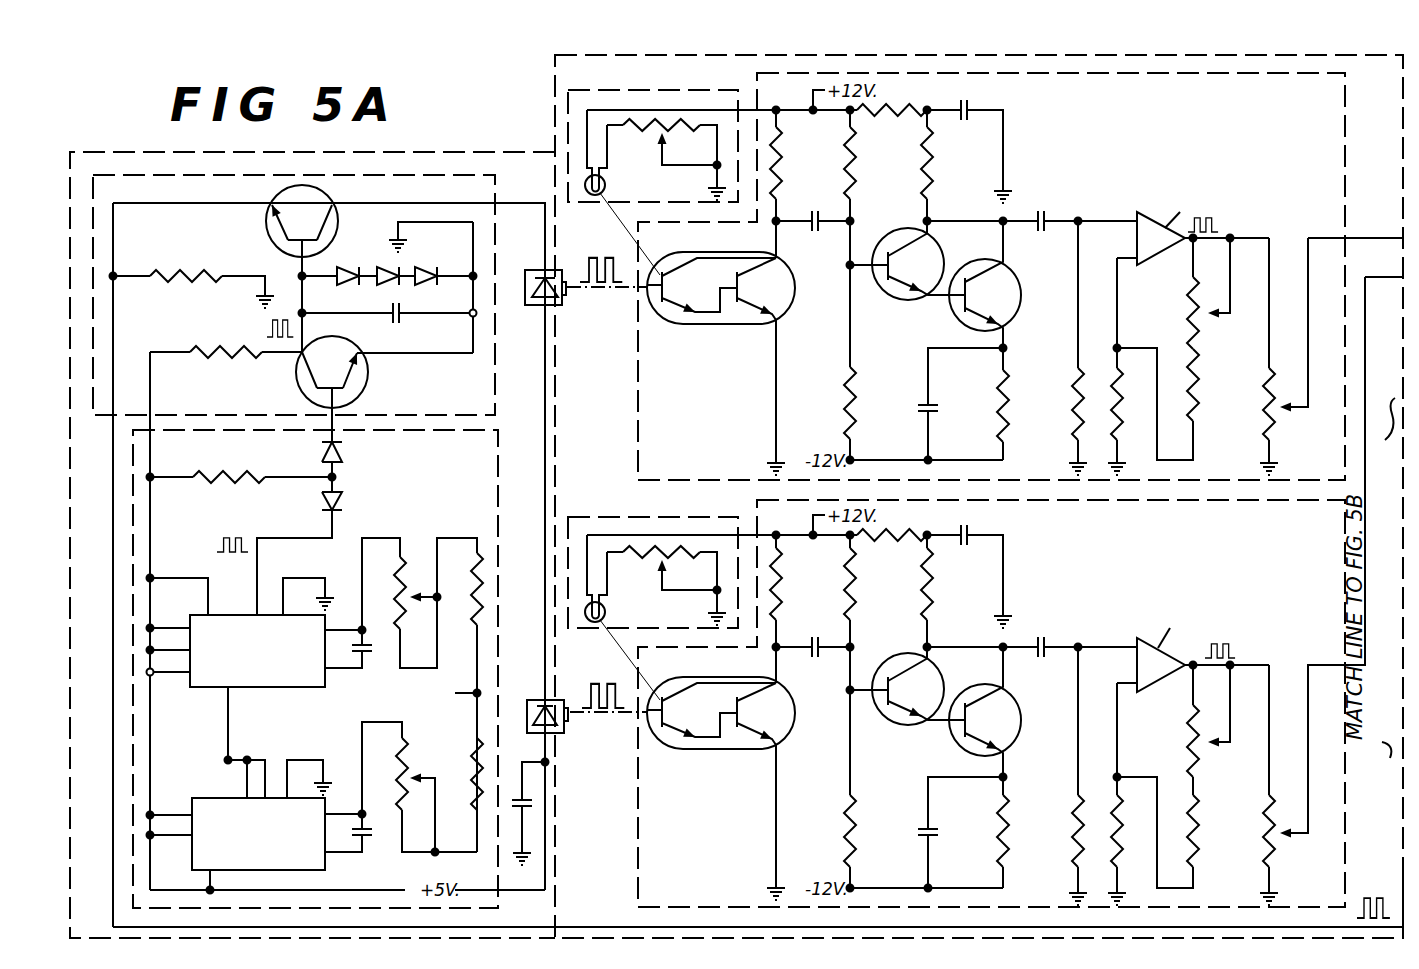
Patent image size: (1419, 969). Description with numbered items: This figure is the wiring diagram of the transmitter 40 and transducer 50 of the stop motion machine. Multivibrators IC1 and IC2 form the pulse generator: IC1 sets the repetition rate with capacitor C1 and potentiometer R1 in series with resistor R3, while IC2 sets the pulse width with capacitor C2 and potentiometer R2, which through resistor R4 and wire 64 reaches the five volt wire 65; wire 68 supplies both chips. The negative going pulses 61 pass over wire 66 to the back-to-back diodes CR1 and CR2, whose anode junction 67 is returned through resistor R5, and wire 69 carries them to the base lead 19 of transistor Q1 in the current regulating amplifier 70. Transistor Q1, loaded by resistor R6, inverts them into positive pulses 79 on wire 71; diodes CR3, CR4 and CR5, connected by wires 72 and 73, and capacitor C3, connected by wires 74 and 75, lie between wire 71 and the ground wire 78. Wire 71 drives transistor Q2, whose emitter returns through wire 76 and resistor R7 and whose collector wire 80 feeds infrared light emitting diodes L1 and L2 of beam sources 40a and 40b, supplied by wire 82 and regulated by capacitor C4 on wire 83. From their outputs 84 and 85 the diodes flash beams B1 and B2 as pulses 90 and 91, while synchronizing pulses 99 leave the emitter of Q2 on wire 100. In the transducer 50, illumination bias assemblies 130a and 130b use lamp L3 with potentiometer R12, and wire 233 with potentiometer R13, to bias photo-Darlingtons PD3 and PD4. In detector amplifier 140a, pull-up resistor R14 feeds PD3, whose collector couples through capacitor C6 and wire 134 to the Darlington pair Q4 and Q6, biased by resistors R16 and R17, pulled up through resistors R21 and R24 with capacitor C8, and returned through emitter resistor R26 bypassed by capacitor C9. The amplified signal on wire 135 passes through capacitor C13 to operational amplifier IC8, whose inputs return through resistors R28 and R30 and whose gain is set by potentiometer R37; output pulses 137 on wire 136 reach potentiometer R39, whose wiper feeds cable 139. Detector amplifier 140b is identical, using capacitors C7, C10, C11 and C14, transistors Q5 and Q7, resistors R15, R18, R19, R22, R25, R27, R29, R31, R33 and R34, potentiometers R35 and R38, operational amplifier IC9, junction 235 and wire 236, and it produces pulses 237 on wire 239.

The current regulating amplifier 70 is at (141, 166).
The transmitter 40 is at (458, 152).
The transducer 50 is at (548, 90).
The wire 80 is at (413, 203).
The wire 76 is at (113, 243).
The wire 71 is at (300, 288).
The wire 72 is at (306, 277).
The wire 73 is at (448, 282).
The wire 74 is at (340, 317).
The wire 75 is at (426, 314).
The wire 78 is at (420, 353).
The positive pulses 79 is at (265, 328).
The transistor input 19 is at (298, 365).
The wire 69 is at (328, 426).
The junction 67 is at (340, 477).
The wire 66 is at (292, 538).
The negative going logic level zero pulses 61 is at (236, 535).
The wire 68 is at (152, 550).
The wire 65 is at (477, 670).
The wire 64 is at (362, 736).
The wire 83 is at (522, 779).
The wire 82 is at (545, 866).
The light beam output 84 is at (565, 303).
The light beam output 85 is at (564, 731).
The pulses 90 is at (598, 257).
The pulses 91 is at (610, 683).
The wire 100 is at (622, 926).
The constant adjustable source of illumination 130a is at (700, 88).
The illumination bias assembly 130b is at (626, 514).
The wire 134 is at (854, 245).
The wire 135 is at (1020, 220).
The wire 136 is at (1270, 253).
The output pulses 137 is at (1225, 230).
The shielded cable 139 is at (1388, 238).
The detector amplifier circuit 140a is at (1349, 150).
The detector amplifier circuit 140b is at (1348, 770).
The wire 233 is at (700, 535).
The amplifier output junction 235 is at (1018, 645).
The wire 236 is at (1275, 676).
The pulse 237 is at (1235, 652).
The wire 239 is at (1393, 277).
The synchronized pulses 99 is at (1386, 898).
The beam source 40a is at (553, 264).
The beam source 40b is at (543, 694).
The junction transistor Q1 is at (362, 389).
The junction transistor Q2 is at (270, 200).
The transistor Q4 is at (903, 306).
The transistor Q5 is at (903, 730).
The transistor Q6 is at (1018, 285).
The transistor Q7 is at (1018, 713).
The potentiometer R1 is at (405, 745).
The potentiometer R2 is at (405, 557).
The resistor R3 is at (474, 757).
The resistor R4 is at (474, 572).
The resistor R5 is at (245, 484).
The resistor R6 is at (218, 356).
The resistor R7 is at (193, 280).
The potentiometer R12 is at (651, 137).
The potentiometer R13 is at (651, 560).
The pull-up resistor R14 is at (782, 156).
The resistor R15 is at (782, 581).
The resistor R16 is at (856, 159).
The resistor R17 is at (858, 409).
The resistor R18 is at (856, 591).
The resistor R19 is at (848, 812).
The resistor R21 is at (888, 110).
The resistor R22 is at (893, 535).
The pull-up resistor R24 is at (934, 161).
The resistor R25 is at (934, 581).
The emitter resistor R26 is at (1013, 394).
The resistor R27 is at (998, 816).
The resistor R28 is at (1073, 380).
The resistor R29 is at (1073, 833).
The resistor R30 is at (1150, 372).
The resistor R31 is at (1125, 823).
The resistor R33 is at (1200, 816).
The resistor R34 is at (856, 669).
The potentiometer R35 is at (1190, 739).
The potentiometer R37 is at (1190, 313).
The potentiometer R38 is at (1263, 832).
The potentiometer R39 is at (1266, 396).
The capacitor C1 is at (366, 840).
The capacitor C2 is at (366, 655).
The capacitor C3 is at (401, 310).
The voltage regulating capacitor C4 is at (518, 808).
The capacitor C6 is at (811, 233).
The capacitor C7 is at (811, 659).
The capacitor C8 is at (969, 109).
The capacitor C9 is at (931, 405).
The capacitor C10 is at (969, 532).
The capacitor C11 is at (928, 826).
The capacitor C13 is at (1051, 213).
The capacitor C14 is at (1047, 656).
The diode CR1 is at (345, 501).
The diode CR2 is at (322, 456).
The diode CR3 is at (340, 267).
The diode CR4 is at (386, 267).
The diode CR5 is at (420, 267).
The multivibrator IC1 is at (247, 825).
The multivibrator IC2 is at (247, 668).
The operational amplifier IC8 is at (1165, 271).
The operational amplifier IC9 is at (1161, 693).
The infrared light emitting diode L1 is at (527, 282).
The infrared light emitting diode L2 is at (530, 712).
The incandescent lamp L3 is at (607, 191).
The photo-Darlington PD3 is at (752, 326).
The photo-Darlington PD4 is at (752, 750).
The electromagnetic radiation beam B1 is at (590, 289).
The electromagnetic radiation beam B2 is at (590, 714).